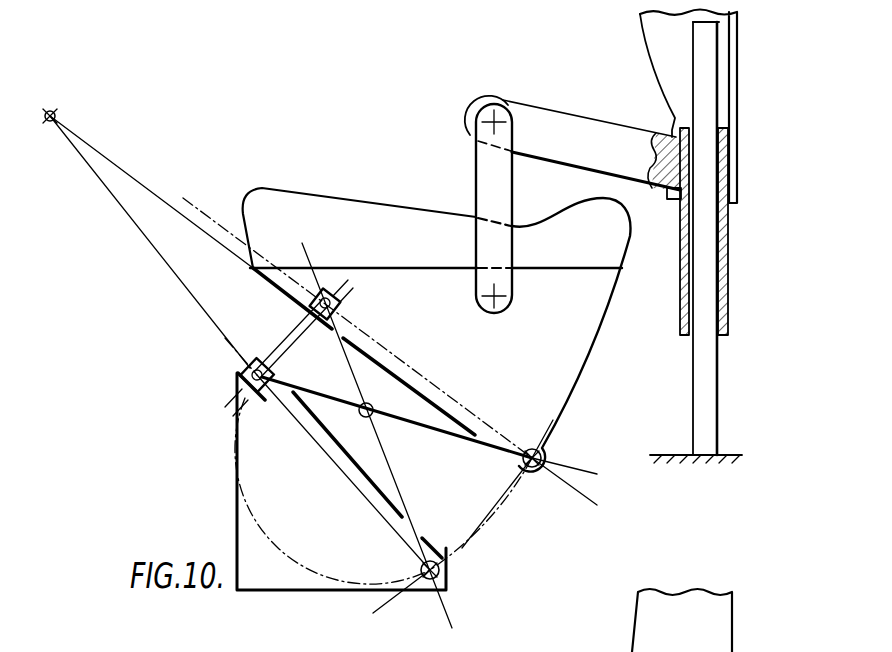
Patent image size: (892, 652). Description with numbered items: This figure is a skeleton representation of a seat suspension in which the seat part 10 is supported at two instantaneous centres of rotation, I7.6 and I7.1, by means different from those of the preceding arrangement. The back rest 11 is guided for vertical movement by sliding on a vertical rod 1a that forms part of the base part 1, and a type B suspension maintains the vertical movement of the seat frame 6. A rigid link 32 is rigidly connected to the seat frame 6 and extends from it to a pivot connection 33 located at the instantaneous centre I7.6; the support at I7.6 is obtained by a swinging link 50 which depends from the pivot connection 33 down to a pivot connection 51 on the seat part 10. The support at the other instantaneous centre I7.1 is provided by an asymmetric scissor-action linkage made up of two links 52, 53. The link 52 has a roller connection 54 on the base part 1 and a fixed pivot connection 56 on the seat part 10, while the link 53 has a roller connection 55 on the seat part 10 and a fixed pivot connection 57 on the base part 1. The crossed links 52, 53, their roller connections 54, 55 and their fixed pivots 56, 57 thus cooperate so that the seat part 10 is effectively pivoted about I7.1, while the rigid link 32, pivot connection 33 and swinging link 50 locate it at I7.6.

The base part 1 is at (267, 575).
The vertical rod 1a is at (688, 438).
The seat frame 6 is at (678, 262).
The seat part 10 is at (283, 227).
The back rest 11 is at (662, 37).
The rigid link 32 is at (597, 92).
The pivot connection 33 is at (506, 108).
The swinging link 50 is at (499, 204).
The pivot connection 51 is at (504, 300).
The link 52 is at (392, 466).
The link 53 is at (408, 424).
The roller connection 54 is at (238, 372).
The roller connection 55 is at (336, 306).
The fixed pivot connection 56 is at (532, 468).
The fixed pivot connection 57 is at (440, 571).
The instantaneous centre of rotation I7.1 is at (53, 111).
The instantaneous centre of rotation I7.6 is at (542, 130).